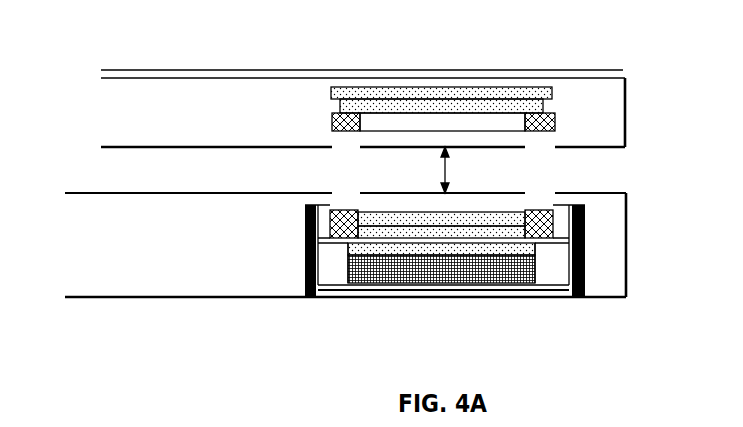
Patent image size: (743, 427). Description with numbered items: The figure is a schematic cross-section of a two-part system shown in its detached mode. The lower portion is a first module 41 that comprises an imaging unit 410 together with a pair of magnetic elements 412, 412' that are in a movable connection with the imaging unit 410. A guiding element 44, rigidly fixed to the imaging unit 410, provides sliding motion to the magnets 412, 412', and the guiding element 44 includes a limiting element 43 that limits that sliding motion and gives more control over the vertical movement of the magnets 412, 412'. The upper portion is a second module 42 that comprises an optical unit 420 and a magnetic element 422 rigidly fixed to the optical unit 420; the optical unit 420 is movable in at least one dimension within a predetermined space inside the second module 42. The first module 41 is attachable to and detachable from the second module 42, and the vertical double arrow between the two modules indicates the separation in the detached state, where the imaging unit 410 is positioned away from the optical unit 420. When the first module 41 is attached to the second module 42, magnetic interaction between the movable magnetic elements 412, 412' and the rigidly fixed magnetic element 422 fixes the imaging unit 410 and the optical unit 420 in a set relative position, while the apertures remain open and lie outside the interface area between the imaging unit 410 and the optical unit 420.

The second module 42 is at (627, 89).
The optical unit 420 is at (508, 85).
The magnetic element 422 is at (332, 122).
The first module 41 is at (175, 297).
The imaging unit 410 is at (598, 262).
The limiting element 43 is at (322, 240).
The guiding element 44 is at (322, 205).
The magnetic element 412 is at (379, 196).
The magnetic element 412' is at (584, 199).